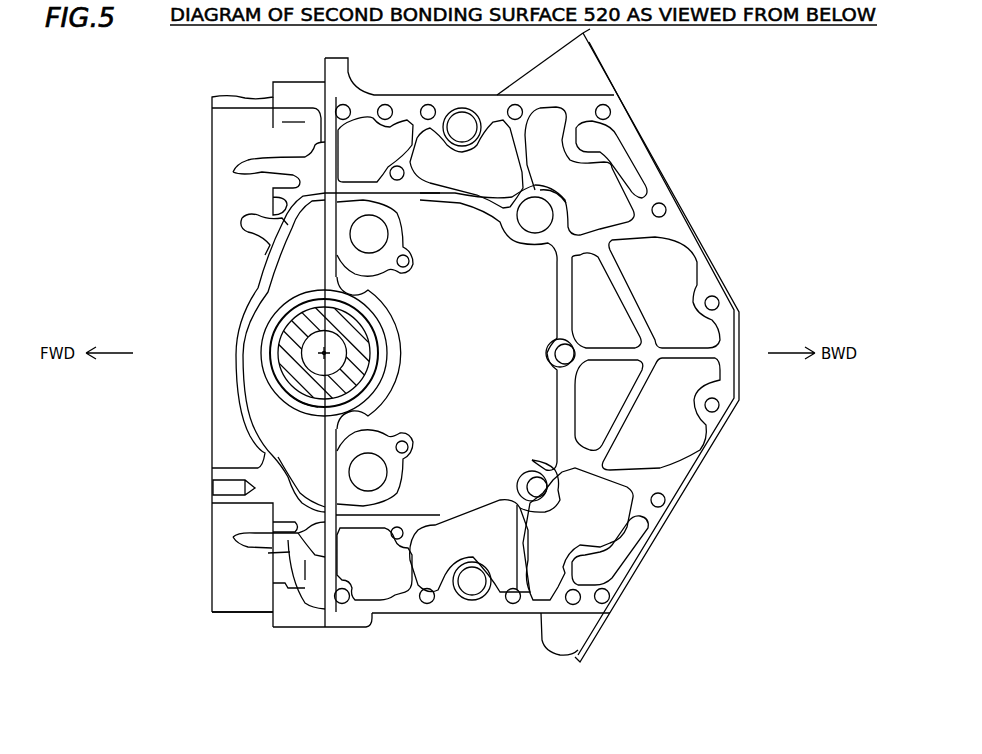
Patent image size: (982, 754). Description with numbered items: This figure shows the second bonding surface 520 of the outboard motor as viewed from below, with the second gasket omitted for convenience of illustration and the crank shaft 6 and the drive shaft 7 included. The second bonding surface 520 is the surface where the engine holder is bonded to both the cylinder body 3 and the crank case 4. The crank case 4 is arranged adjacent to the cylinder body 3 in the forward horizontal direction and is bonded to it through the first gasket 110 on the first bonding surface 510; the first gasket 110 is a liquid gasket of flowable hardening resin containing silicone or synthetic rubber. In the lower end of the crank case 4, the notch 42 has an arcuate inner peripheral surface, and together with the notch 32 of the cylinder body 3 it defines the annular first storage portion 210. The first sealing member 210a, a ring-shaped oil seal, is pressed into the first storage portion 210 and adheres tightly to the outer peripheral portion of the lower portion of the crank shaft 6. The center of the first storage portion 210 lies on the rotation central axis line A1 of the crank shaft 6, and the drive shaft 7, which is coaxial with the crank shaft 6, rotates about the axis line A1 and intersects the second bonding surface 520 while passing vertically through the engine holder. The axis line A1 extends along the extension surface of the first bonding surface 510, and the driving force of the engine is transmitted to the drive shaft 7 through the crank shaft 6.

The cylinder body 3 is at (716, 155).
The crank case 4 is at (181, 141).
The crank shaft 6 is at (303, 356).
The drive shaft 7 is at (322, 351).
The notch 32 is at (370, 335).
The notch 42 is at (283, 323).
The first gasket 110 is at (293, 550).
The first storage portion 210 is at (321, 352).
The first sealing member 210a is at (312, 407).
The first bonding surface 510 is at (260, 652).
The second bonding surface 520 is at (676, 490).
The rotation central axis line A1 is at (327, 354).